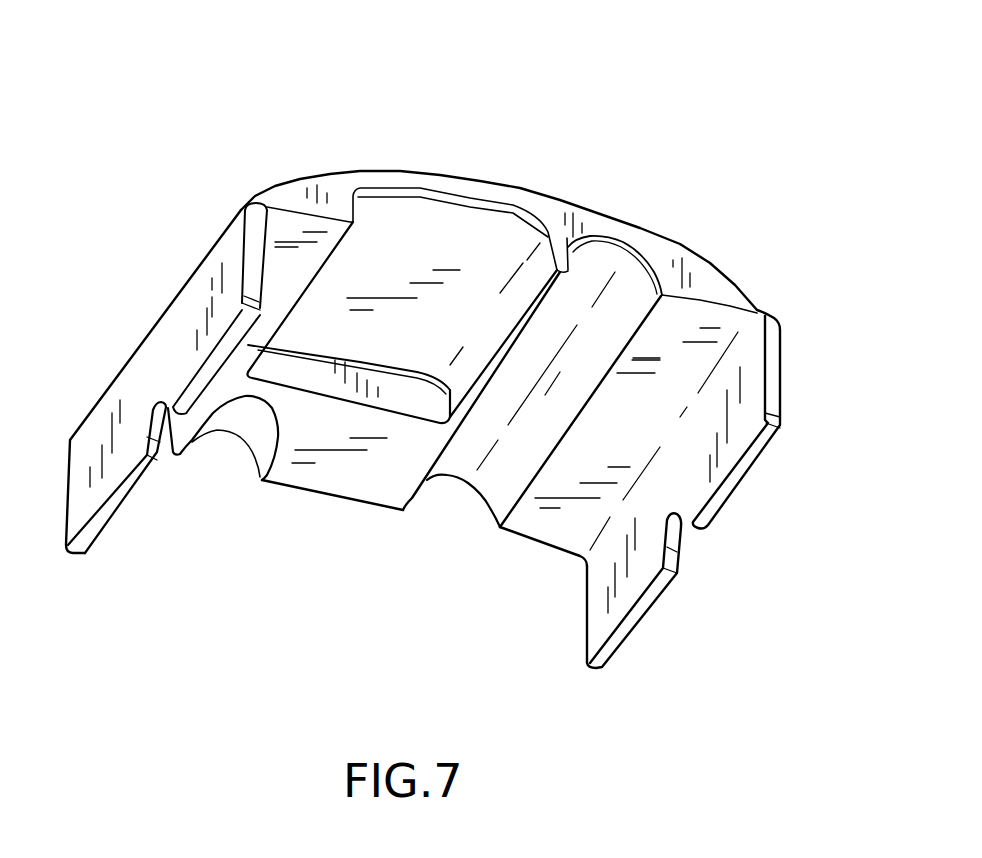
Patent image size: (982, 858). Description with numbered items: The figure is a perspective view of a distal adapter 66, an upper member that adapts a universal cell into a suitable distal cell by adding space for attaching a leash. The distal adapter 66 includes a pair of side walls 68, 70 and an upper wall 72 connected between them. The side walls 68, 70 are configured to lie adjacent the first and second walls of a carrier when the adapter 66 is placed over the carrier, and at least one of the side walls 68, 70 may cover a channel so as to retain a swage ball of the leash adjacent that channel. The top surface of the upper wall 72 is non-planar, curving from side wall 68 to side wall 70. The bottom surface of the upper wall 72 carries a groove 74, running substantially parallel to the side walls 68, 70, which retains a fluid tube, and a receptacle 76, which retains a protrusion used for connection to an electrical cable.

The distal adapter 66 is at (693, 134).
The side wall 68 is at (92, 529).
The side wall 70 is at (615, 652).
The upper wall 72 is at (337, 200).
The groove 74 is at (615, 247).
The receptacle 76 is at (243, 428).